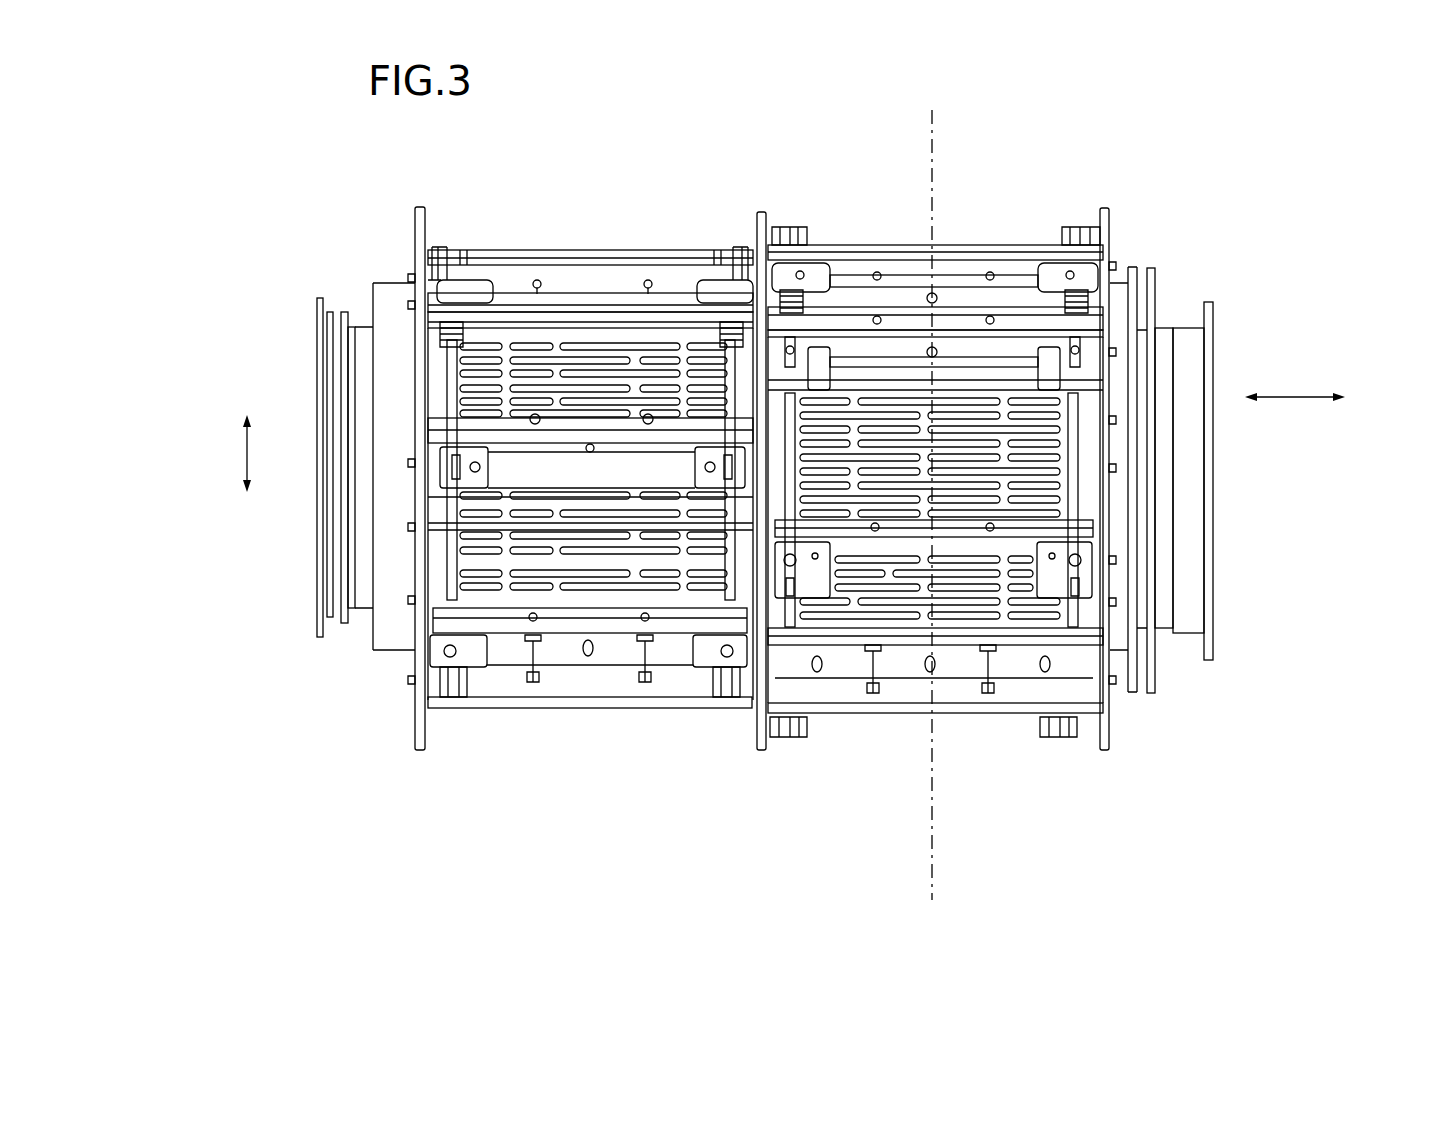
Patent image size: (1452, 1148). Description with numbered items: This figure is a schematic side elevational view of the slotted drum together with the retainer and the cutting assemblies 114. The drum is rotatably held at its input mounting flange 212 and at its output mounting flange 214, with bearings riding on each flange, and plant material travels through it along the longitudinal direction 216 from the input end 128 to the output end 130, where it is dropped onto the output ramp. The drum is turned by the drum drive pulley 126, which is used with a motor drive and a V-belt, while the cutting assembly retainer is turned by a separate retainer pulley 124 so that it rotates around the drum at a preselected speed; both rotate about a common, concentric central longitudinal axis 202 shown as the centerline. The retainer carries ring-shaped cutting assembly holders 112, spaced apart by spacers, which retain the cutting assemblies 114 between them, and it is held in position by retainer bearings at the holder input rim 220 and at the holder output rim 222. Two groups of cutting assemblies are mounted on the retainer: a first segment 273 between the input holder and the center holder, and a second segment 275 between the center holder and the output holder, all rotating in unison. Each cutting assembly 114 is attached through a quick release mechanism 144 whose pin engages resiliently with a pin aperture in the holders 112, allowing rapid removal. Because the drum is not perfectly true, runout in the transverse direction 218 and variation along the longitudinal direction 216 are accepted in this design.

The cutting assembly holders 112 is at (418, 742).
The cutting assembly 114 is at (560, 310).
The retainer pulley 124 is at (1153, 690).
The drum drive pulley 126 is at (318, 640).
The input end 128 is at (1210, 575).
The output end 130 is at (318, 540).
The quick release mechanism 144 is at (793, 228).
The axis of rotation 202 is at (893, 844).
The input mounting flange 212 is at (1210, 302).
The output mounting flange 214 is at (318, 297).
The longitudinal direction 216 is at (1295, 390).
The transverse direction 218 is at (247, 453).
The holder input rim 220 is at (1110, 208).
The holder output rim 222 is at (421, 207).
The first segment 273 is at (918, 486).
The second segment 275 is at (547, 728).